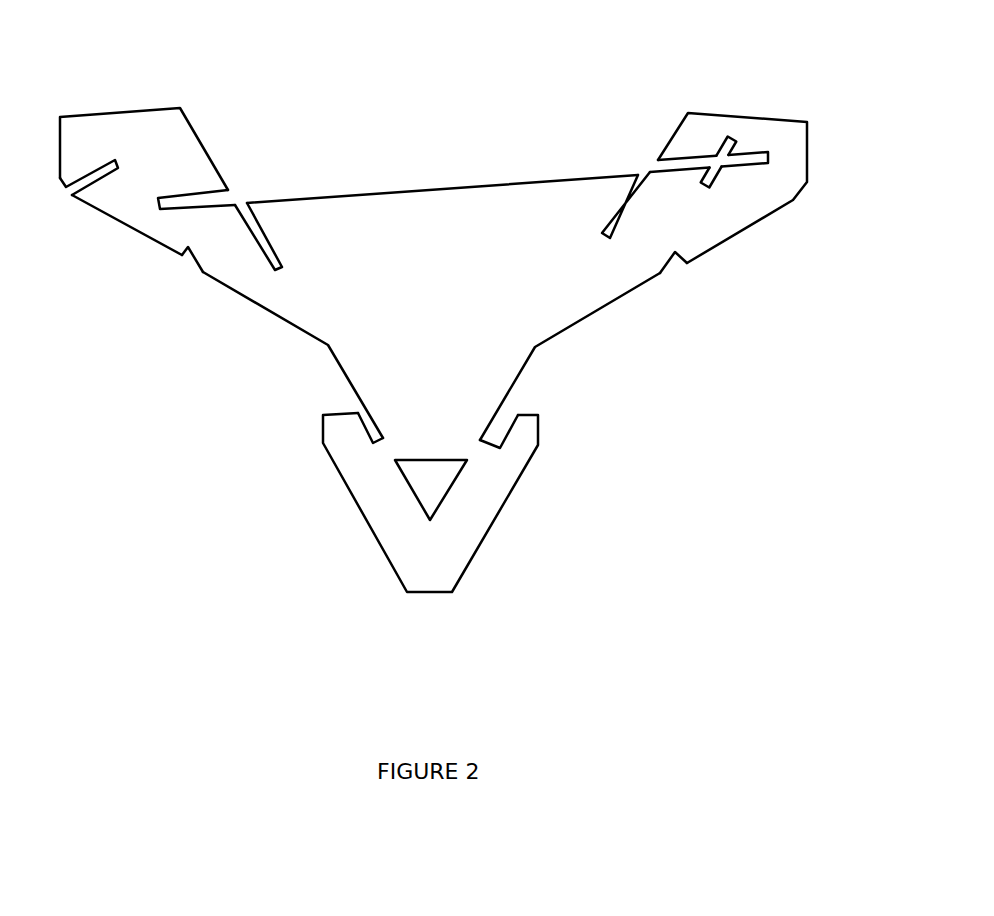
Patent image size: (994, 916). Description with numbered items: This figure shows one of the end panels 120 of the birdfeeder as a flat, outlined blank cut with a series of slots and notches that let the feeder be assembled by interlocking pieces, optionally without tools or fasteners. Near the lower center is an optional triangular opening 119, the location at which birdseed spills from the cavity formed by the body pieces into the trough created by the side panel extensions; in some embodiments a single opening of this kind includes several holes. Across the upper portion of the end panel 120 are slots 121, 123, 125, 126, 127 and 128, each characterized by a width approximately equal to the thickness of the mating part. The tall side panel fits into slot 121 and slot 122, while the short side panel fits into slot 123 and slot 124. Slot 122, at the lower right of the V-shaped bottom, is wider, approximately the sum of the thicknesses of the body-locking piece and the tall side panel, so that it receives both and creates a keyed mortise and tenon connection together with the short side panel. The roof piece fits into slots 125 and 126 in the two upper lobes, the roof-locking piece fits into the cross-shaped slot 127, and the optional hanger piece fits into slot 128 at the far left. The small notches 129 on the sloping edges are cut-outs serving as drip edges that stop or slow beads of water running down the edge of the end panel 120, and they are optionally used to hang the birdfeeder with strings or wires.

The opening 119 is at (433, 468).
The end panel 120 is at (507, 500).
The slot 121 is at (622, 208).
The slot 122 is at (497, 430).
The slot 123 is at (262, 237).
The slot 124 is at (367, 427).
The slot 125 is at (695, 165).
The slot 126 is at (187, 197).
The slot 127 is at (707, 173).
The slot 128 is at (88, 178).
The notch 129 is at (188, 258).